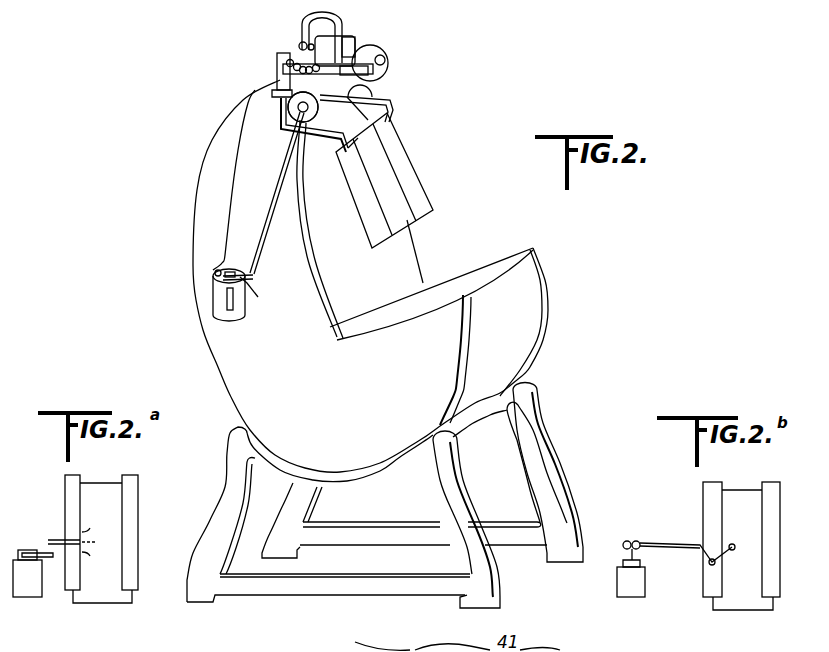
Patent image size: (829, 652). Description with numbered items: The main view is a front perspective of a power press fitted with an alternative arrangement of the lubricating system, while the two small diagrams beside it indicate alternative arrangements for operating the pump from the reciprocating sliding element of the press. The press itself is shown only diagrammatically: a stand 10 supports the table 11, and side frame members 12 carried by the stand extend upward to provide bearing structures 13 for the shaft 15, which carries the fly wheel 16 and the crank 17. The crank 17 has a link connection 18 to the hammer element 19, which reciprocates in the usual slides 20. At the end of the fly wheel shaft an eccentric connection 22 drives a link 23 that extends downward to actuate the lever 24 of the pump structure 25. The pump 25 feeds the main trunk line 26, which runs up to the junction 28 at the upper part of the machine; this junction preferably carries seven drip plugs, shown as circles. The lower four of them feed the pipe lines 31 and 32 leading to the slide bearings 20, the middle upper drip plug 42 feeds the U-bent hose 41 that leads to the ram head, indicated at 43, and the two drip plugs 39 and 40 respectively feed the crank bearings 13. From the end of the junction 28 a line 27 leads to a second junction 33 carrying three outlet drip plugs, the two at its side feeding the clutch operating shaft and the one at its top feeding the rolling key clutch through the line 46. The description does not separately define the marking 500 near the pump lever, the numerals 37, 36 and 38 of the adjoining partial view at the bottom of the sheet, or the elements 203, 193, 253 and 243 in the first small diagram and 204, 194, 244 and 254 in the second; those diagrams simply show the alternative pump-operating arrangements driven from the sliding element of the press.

In FIG. 2, the stand 10 is at (565, 495).
In FIG. 2, the table 11 is at (545, 303).
In FIG. 2, the side frame member 12 is at (206, 360).
In FIG. 2, the bearing structure 13 is at (388, 60).
In FIG. 2, the shaft 15 is at (287, 112).
In FIG. 2, the crank 17 is at (388, 92).
In FIG. 2, the link connection 18 is at (396, 113).
In FIG. 2, the hammer element 19 is at (405, 190).
In FIG. 2, the slides 20 is at (412, 138).
In FIG. 2, the eccentric connection 22 is at (286, 138).
In FIG. 2, the link 23 is at (277, 189).
In FIG. 2, the lever 24 is at (247, 287).
In FIG. 2, the pump structure 25 is at (213, 296).
In FIG. 2, the main trunk line 26 is at (228, 190).
In FIG. 2, the line 27 is at (365, 45).
In FIG. 2, the junction 28 is at (277, 80).
In FIG. 2, the pipe line 31 is at (353, 141).
In FIG. 2, the pipe line 32 is at (395, 105).
In FIG. 2, the junction 33 is at (388, 72).
In FIG. 2, the drip plug 39 is at (287, 72).
In FIG. 2, the drip plug 40 is at (342, 18).
In FIG. 2, the U-bent hose 41 is at (302, 22).
In FIG. 2, the middle upper drip plug 42 is at (287, 62).
In FIG. 2, the ram head 43 is at (352, 38).
In FIG. 2, the line 46 is at (386, 52).
In FIG. 2, the lever 500 is at (255, 278).
In FIG. 2, the fly wheel 16 is at (358, 642).
In FIG. 2, the part 37 is at (442, 642).
In FIG. 2, the part 36 is at (477, 642).
In FIG. 2, the part 38 is at (540, 642).
In FIG. 2a, the plate 203 is at (133, 498).
In FIG. 2a, the plate 193 is at (107, 528).
In FIG. 2a, the weight 253 is at (23, 587).
In FIG. 2a, the arm 243 is at (50, 557).
In FIG. 2b, the plate 204 is at (710, 498).
In FIG. 2b, the plate 194 is at (733, 515).
In FIG. 2b, the arm 244 is at (623, 555).
In FIG. 2b, the weight 254 is at (632, 592).